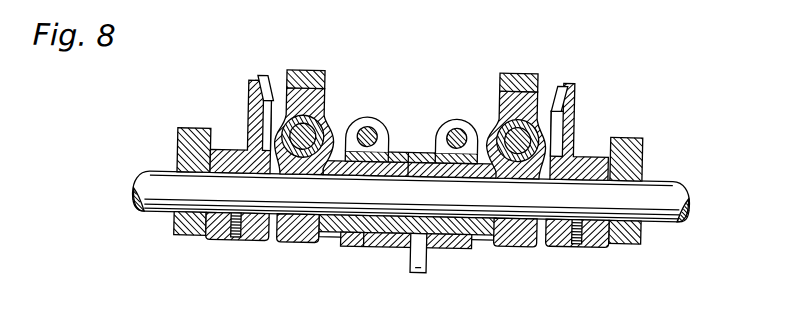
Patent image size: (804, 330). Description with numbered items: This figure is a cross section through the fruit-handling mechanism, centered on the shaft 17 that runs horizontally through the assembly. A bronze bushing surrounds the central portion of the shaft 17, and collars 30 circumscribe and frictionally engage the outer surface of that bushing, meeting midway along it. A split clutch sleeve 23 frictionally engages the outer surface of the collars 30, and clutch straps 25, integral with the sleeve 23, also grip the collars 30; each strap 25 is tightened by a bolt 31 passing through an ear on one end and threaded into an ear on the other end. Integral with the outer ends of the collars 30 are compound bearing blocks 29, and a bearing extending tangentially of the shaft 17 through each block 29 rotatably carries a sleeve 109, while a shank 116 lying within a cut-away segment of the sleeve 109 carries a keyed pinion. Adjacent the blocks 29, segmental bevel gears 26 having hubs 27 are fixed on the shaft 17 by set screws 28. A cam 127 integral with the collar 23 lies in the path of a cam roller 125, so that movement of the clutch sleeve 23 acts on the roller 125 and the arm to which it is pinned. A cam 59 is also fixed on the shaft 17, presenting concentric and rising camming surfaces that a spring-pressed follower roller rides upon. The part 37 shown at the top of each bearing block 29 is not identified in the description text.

The shaft 17 is at (153, 180).
The split clutch sleeve 23 is at (411, 250).
The clutch strap 25 is at (428, 147).
The segmental bevel gear 26 is at (257, 75).
The hub 27 is at (212, 239).
The set screw 28 is at (234, 236).
The compound bearing block 29 is at (318, 92).
The collar 30 is at (334, 234).
The bolt 31 is at (366, 122).
The cap 37 is at (322, 67).
The cam 59 is at (177, 141).
The sleeve 109 is at (266, 130).
The shank 116 is at (262, 110).
The cam roller 125 is at (366, 243).
The cam 127 is at (420, 268).